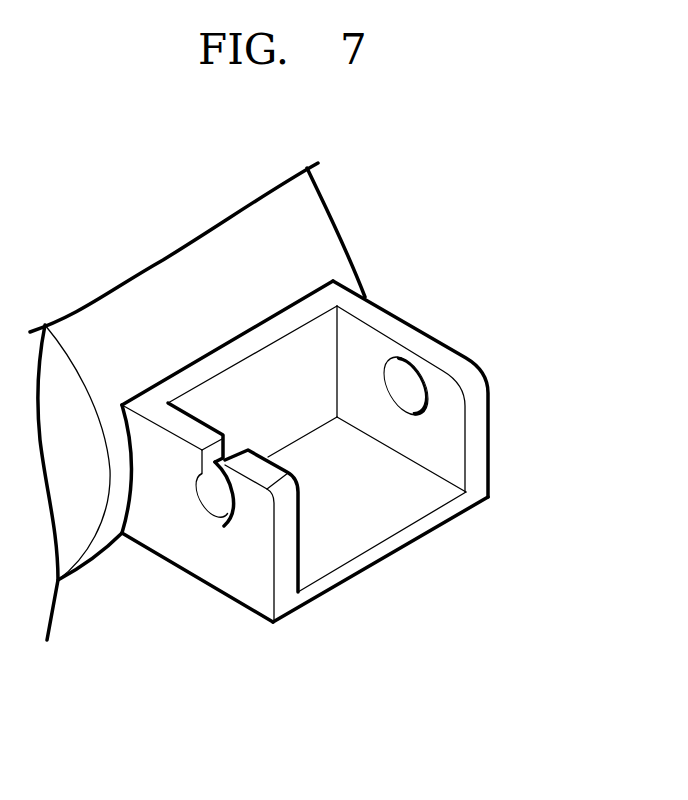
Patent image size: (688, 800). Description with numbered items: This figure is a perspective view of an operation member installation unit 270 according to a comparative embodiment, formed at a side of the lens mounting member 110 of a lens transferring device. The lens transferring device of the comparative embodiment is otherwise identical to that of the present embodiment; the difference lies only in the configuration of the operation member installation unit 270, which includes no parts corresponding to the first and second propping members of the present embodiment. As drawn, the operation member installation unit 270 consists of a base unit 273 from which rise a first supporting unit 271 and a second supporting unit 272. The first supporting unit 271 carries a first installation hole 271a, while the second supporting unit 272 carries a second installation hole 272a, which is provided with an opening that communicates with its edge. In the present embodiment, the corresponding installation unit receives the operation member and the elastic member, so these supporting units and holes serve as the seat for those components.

The lens mounting member 110 is at (198, 257).
The operation member installation unit 270 is at (324, 445).
The first supporting unit 271 is at (393, 323).
The first installation hole 271a is at (404, 388).
The second supporting unit 272 is at (285, 528).
The second installation hole 272a is at (213, 510).
The base unit 273 is at (370, 520).